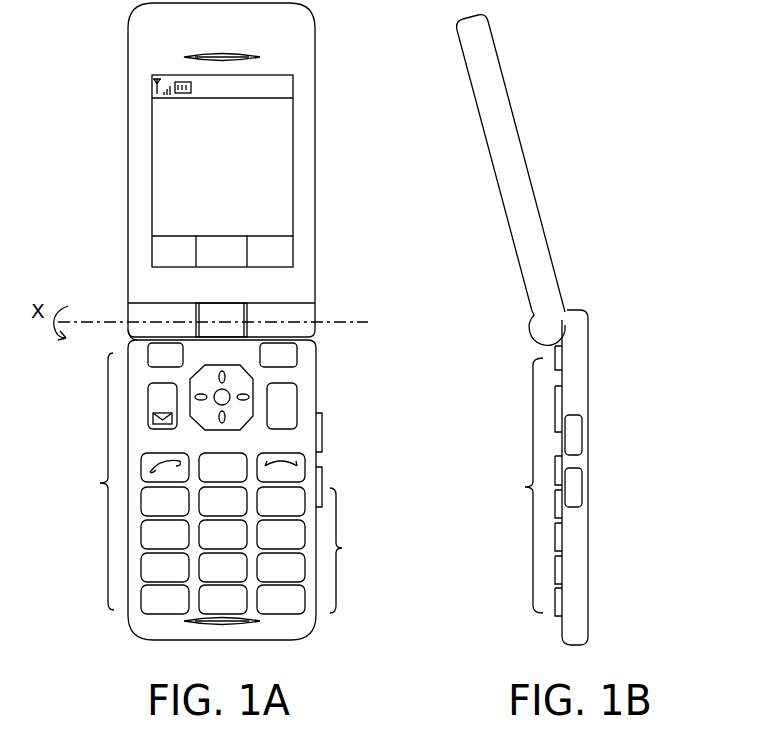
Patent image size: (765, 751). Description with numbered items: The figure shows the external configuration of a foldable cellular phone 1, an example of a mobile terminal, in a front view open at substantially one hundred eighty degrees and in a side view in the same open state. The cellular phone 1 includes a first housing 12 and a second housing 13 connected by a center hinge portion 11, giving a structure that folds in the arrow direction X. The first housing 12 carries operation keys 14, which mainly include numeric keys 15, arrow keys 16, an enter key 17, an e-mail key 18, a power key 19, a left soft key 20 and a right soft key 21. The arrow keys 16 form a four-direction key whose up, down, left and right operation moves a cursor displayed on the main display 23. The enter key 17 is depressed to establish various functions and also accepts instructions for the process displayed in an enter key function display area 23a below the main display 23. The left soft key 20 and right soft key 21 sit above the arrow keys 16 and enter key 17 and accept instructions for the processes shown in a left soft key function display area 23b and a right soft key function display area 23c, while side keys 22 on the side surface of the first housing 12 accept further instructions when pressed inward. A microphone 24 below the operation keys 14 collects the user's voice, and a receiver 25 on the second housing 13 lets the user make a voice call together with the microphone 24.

In FIG. 1A, the cellular phone 1 is at (368, 514).
In FIG. 1B, the cellular phone 1 is at (608, 530).
In FIG. 1A, the center hinge portion 11 is at (228, 327).
In FIG. 1B, the center hinge portion 11 is at (548, 325).
In FIG. 1A, the first housing 12 is at (316, 368).
In FIG. 1B, the first housing 12 is at (588, 385).
In FIG. 1A, the second housing 13 is at (316, 170).
In FIG. 1B, the second housing 13 is at (527, 172).
In FIG. 1A, the operation keys 14 is at (91, 494).
In FIG. 1B, the operation keys 14 is at (517, 498).
In FIG. 1A, the numeric keys 15 is at (255, 550).
In FIG. 1A, the arrow keys 16 is at (220, 397).
In FIG. 1A, the enter key 17 is at (225, 395).
In FIG. 1A, the e-mail key 18 is at (148, 410).
In FIG. 1A, the power key 19 is at (300, 464).
In FIG. 1A, the left soft key 20 is at (148, 352).
In FIG. 1A, the right soft key 21 is at (297, 355).
In FIG. 1A, the side keys 22 is at (323, 425).
In FIG. 1B, the side keys 22 is at (578, 435).
In FIG. 1A, the main display 23 is at (285, 113).
In FIG. 1A, the enter key function display area 23a is at (222, 243).
In FIG. 1A, the left soft key function display area 23b is at (155, 252).
In FIG. 1A, the right soft key function display area 23c is at (280, 252).
In FIG. 1A, the microphone 24 is at (255, 622).
In FIG. 1A, the receiver 25 is at (260, 57).